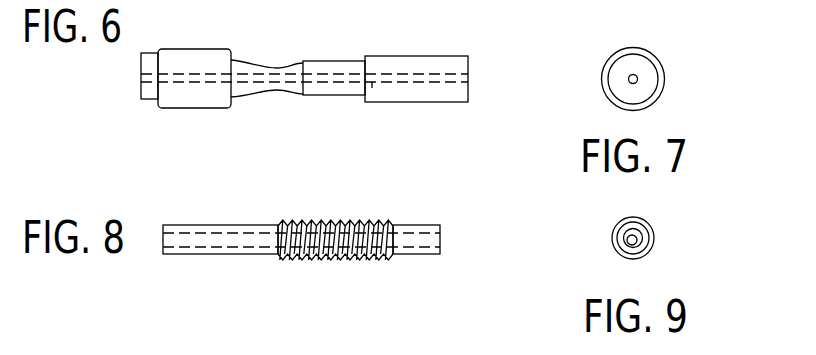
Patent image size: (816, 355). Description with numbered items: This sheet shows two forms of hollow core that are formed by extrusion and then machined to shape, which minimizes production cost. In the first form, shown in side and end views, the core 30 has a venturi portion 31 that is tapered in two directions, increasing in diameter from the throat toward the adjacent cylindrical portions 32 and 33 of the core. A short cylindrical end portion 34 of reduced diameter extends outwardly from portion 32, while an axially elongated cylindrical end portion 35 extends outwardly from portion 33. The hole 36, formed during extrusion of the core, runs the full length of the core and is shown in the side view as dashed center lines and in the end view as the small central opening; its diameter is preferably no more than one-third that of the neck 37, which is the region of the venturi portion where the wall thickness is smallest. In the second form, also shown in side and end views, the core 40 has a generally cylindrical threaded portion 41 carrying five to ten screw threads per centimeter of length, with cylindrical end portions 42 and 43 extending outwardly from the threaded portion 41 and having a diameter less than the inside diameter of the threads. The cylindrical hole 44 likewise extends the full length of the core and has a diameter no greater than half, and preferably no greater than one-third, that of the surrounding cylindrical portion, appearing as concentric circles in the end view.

In FIG. 6, the core 30 is at (228, 49).
In FIG. 7, the core 30 is at (615, 62).
In FIG. 6, the venturi portion 31 is at (244, 98).
In FIG. 6, the cylindrical portion 32 is at (219, 108).
In FIG. 6, the cylindrical portion 33 is at (322, 62).
In FIG. 6, the short cylindrical end portion 34 is at (152, 100).
In FIG. 6, the axially elongated cylindrical end portion 35 is at (450, 103).
In FIG. 7, the axially elongated cylindrical end portion 35 is at (651, 64).
In FIG. 6, the hole 36 is at (372, 88).
In FIG. 7, the hole 36 is at (637, 83).
In FIG. 6, the neck 37 is at (276, 66).
In FIG. 8, the core 40 is at (235, 225).
In FIG. 9, the core 40 is at (612, 235).
In FIG. 8, the threaded portion 41 is at (375, 260).
In FIG. 8, the cylindrical end portion 42 is at (210, 254).
In FIG. 8, the cylindrical end portion 43 is at (420, 225).
In FIG. 9, the cylindrical end portion 43 is at (653, 232).
In FIG. 8, the cylindrical hole 44 is at (250, 247).
In FIG. 9, the cylindrical hole 44 is at (624, 245).